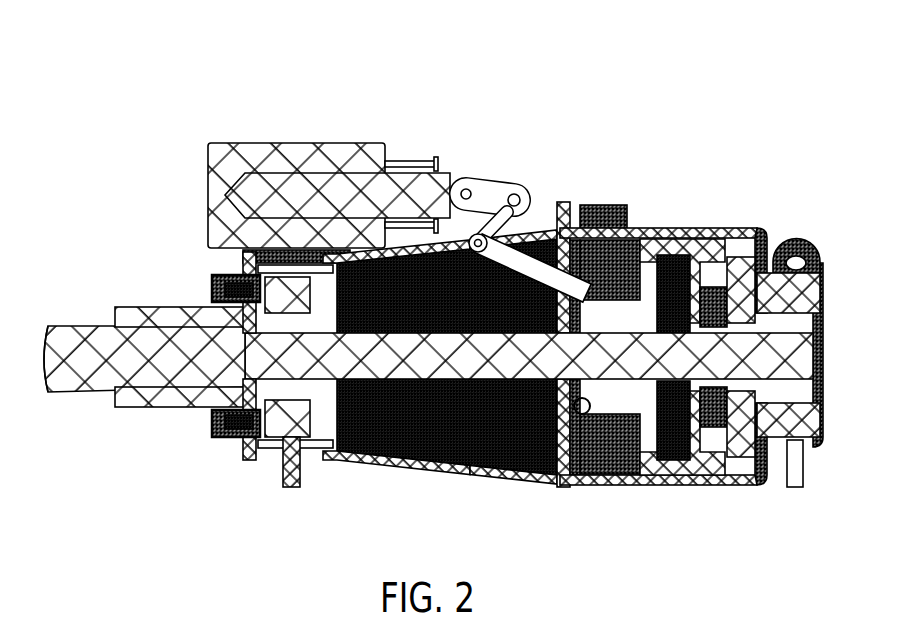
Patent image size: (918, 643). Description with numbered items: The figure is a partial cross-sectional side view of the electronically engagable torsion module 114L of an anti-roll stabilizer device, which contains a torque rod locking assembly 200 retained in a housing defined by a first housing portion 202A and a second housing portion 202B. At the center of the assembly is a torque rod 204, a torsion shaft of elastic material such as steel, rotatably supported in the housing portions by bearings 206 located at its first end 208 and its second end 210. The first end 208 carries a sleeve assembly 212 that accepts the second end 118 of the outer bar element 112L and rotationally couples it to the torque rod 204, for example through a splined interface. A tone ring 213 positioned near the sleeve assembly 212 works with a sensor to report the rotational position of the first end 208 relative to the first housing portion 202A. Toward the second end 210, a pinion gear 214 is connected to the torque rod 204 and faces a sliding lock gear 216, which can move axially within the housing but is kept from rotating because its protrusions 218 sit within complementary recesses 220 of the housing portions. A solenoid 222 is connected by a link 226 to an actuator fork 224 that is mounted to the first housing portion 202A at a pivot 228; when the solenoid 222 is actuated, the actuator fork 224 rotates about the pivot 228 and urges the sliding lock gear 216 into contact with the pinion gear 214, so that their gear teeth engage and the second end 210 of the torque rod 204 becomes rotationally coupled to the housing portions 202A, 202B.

The outer bar element 112L is at (83, 328).
The electronically engagable torsion module 114L is at (470, 86).
The second end of the outer bar element 118 is at (165, 366).
The torque rod locking assembly 200 is at (690, 195).
The first housing portion 202A is at (365, 464).
The second housing portion 202B is at (598, 488).
The torque rod 204 is at (505, 360).
The bearings 206 is at (287, 425).
The first end of the torque rod 208 is at (212, 423).
The second end of the torque rod 210 is at (783, 352).
The sleeve assembly 212 is at (158, 307).
The tone ring 213 is at (222, 440).
The pinion gear 214 is at (761, 230).
The sliding lock gear 216 is at (685, 463).
The protrusions 218 is at (650, 470).
The recesses 220 is at (738, 472).
The solenoid 222 is at (256, 127).
The actuator fork 224 is at (538, 246).
The link 226 is at (492, 195).
The pivot 228 is at (527, 270).